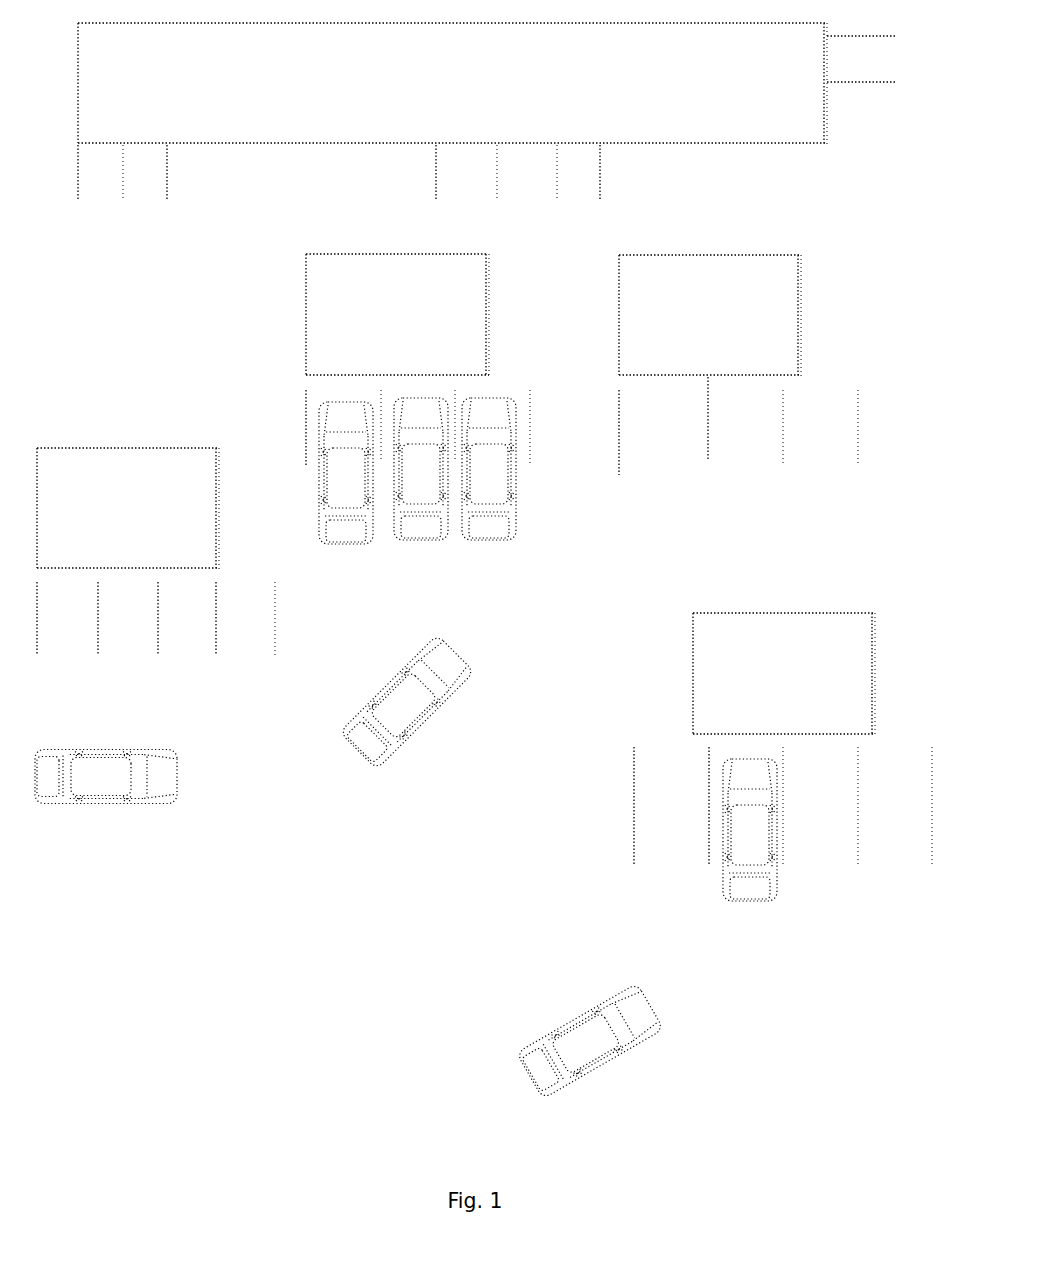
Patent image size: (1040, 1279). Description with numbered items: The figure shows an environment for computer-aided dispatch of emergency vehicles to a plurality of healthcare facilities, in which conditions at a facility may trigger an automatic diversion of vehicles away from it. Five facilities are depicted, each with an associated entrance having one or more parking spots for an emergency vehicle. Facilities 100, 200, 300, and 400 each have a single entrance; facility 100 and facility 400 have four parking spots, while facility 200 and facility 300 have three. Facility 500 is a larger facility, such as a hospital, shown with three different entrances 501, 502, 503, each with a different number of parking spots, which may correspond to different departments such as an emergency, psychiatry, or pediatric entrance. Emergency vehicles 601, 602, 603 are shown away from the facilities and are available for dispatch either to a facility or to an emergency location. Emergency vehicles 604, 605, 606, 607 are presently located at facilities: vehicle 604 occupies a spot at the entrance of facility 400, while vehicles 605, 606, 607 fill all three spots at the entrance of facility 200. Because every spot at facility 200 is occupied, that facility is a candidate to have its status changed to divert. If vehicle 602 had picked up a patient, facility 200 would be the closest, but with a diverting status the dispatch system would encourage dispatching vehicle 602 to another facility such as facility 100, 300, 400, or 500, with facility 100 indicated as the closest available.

The facility 100 is at (90, 451).
The facility 200 is at (430, 257).
The facility 300 is at (745, 258).
The facility 400 is at (800, 617).
The facility 500 is at (455, 23).
The entrance 501 is at (167, 197).
The entrance 502 is at (600, 195).
The entrance 503 is at (868, 68).
The emergency vehicle 601 is at (165, 770).
The emergency vehicle 602 is at (462, 728).
The emergency vehicle 603 is at (645, 1050).
The emergency vehicle 604 is at (770, 900).
The emergency vehicle 605 is at (345, 545).
The emergency vehicle 606 is at (420, 542).
The emergency vehicle 607 is at (495, 537).